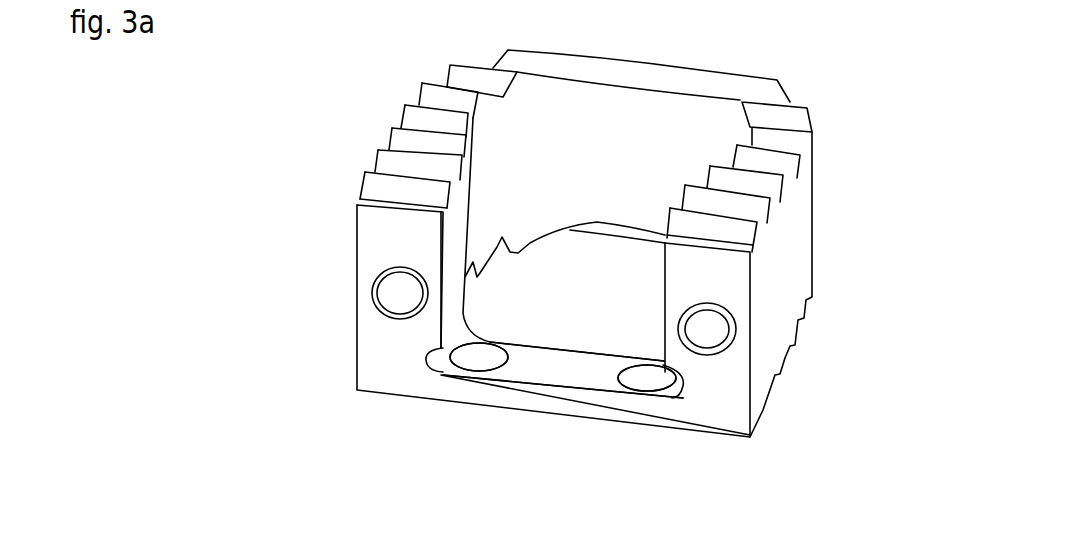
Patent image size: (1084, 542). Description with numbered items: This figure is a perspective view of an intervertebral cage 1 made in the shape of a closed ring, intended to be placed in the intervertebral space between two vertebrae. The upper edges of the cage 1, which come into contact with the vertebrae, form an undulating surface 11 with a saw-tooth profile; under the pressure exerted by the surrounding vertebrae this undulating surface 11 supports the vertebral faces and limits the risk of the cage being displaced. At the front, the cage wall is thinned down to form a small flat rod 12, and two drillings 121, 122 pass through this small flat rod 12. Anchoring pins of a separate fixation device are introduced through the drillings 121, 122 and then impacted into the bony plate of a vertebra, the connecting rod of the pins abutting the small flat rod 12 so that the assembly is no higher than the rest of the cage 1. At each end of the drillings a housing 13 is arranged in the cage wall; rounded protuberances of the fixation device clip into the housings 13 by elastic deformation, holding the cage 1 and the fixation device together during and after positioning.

The intervertebral cage 1 is at (793, 238).
The undulating surface 11 is at (380, 153).
The small flat rod 12 is at (565, 370).
The housing 13 is at (427, 358).
The drilling 121 is at (472, 360).
The drilling 122 is at (645, 380).